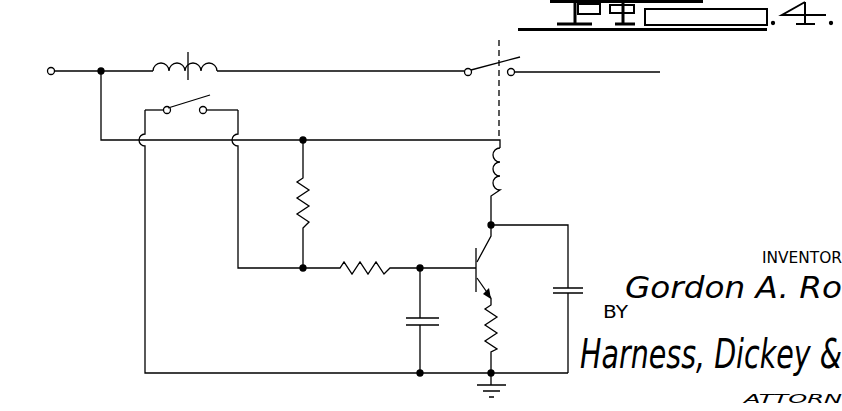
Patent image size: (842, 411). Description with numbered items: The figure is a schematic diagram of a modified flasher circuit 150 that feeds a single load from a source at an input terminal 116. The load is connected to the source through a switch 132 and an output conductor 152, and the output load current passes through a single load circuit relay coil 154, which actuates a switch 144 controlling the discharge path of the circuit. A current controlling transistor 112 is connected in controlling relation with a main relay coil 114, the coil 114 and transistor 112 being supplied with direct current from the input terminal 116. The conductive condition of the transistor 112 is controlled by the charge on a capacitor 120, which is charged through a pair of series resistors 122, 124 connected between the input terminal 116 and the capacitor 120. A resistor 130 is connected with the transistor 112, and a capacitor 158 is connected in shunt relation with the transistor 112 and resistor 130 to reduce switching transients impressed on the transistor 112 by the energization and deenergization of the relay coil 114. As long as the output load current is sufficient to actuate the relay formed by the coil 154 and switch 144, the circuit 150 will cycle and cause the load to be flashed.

The input terminal 116 is at (54, 66).
The load circuit relay coil 154 is at (207, 62).
The switch 132 is at (487, 56).
The output conductor 152 is at (573, 75).
The switch 144 is at (256, 106).
The flasher circuit 150 is at (312, 322).
The main relay coil 114 is at (506, 166).
The resistor 122 is at (309, 184).
The resistor 124 is at (367, 264).
The capacitor 120 is at (405, 323).
The current controlling transistor 112 is at (494, 270).
The resistor 130 is at (497, 325).
The capacitor 158 is at (584, 287).